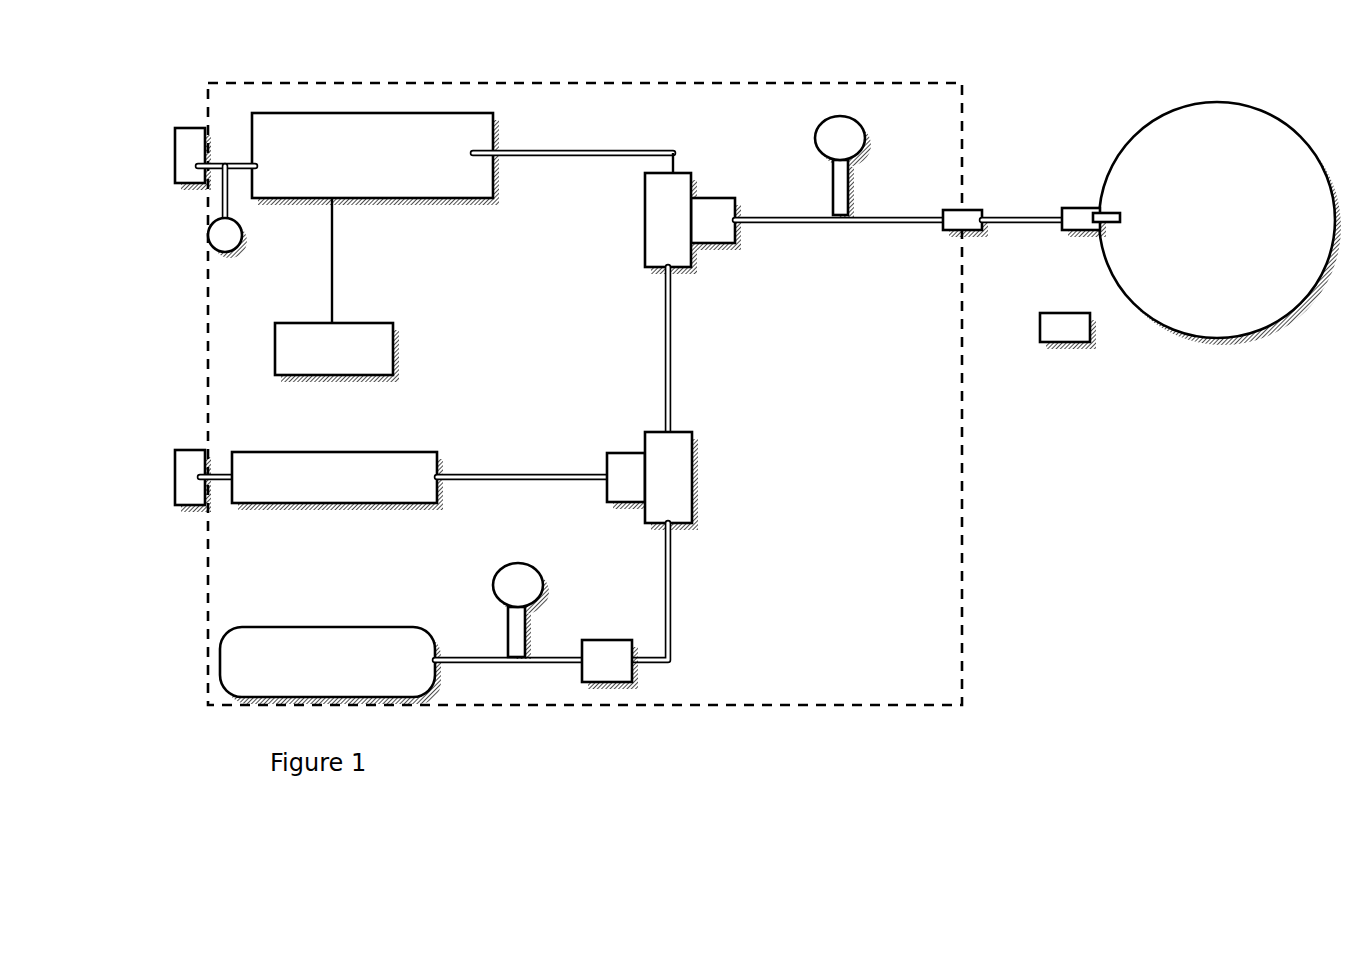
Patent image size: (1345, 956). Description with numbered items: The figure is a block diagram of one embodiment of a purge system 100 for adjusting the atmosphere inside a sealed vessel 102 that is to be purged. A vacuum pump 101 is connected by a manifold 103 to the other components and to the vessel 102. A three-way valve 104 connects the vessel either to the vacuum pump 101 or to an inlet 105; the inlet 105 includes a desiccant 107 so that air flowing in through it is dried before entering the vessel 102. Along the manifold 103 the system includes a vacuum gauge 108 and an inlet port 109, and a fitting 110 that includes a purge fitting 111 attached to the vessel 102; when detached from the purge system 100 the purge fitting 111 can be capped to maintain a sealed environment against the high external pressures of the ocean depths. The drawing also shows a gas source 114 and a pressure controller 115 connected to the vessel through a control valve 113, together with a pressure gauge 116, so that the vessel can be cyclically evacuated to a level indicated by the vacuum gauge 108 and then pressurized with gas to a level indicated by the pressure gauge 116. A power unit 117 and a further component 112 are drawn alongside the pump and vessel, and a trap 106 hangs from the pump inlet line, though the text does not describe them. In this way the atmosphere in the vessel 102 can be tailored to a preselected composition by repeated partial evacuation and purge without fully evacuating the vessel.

The purge system 100 is at (632, 745).
The vacuum pump 101 is at (396, 128).
The sealed vessel 102 is at (1220, 247).
The manifold 103 is at (1016, 228).
The three-way valve 104 is at (668, 219).
The inlet 105 is at (175, 481).
The exhaust trap 106 is at (244, 218).
The desiccant 107 is at (337, 462).
The vacuum gauge 108 is at (831, 140).
The inlet port 109 is at (964, 210).
The fitting 110 is at (1069, 205).
The purge fitting 111 is at (1106, 210).
The control unit 112 is at (1059, 335).
The control valve 113 is at (678, 487).
The gas source 114 is at (330, 644).
The pressure controller 115 is at (606, 646).
The pressure gauge 116 is at (525, 594).
The power supply 117 is at (374, 340).